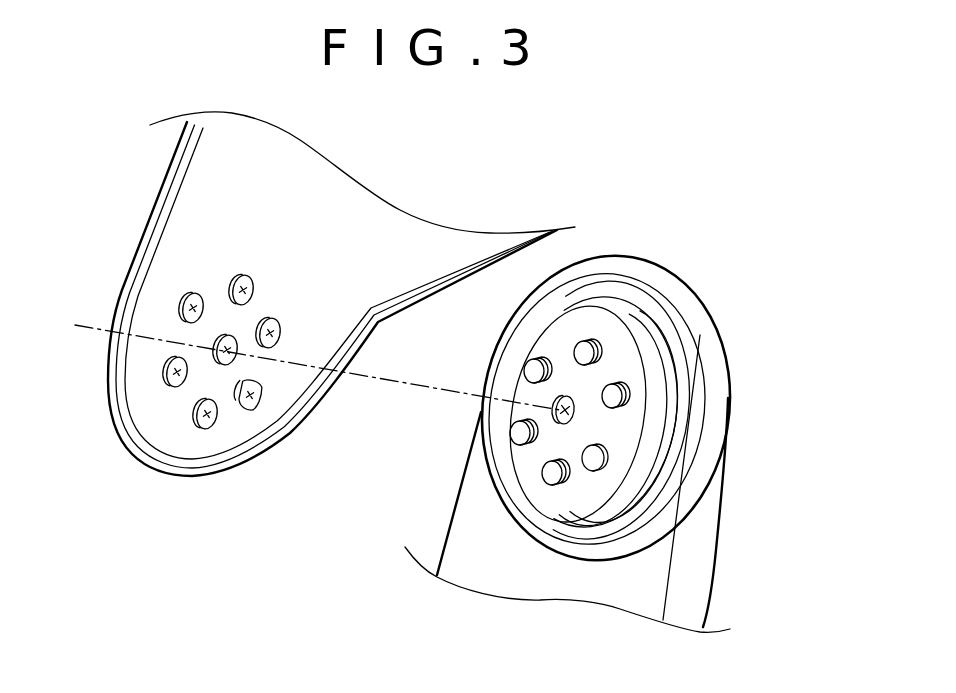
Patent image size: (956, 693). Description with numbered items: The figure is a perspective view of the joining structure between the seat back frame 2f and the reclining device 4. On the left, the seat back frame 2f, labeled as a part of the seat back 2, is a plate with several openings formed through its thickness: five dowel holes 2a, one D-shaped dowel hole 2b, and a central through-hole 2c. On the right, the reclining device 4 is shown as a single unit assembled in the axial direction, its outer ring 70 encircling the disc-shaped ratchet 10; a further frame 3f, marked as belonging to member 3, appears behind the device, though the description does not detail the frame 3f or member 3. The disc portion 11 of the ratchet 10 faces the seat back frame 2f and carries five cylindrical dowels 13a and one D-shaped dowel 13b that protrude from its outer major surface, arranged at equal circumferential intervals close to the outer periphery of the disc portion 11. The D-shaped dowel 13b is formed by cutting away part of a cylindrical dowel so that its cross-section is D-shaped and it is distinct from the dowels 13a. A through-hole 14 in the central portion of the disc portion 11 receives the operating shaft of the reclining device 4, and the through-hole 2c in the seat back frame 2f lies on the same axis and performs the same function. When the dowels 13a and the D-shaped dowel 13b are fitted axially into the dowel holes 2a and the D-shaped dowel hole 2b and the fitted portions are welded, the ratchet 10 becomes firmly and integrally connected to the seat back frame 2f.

The first member 2 is at (321, 294).
The seat back frame 2f is at (330, 200).
The dowel holes 2a is at (193, 300).
The D-shaped dowel hole 2b is at (266, 384).
The through-hole 2c is at (227, 336).
The second member 3 is at (607, 402).
The flange of second member 3f is at (663, 547).
The reclining device 4 is at (600, 273).
The outer ring 70 is at (644, 304).
The ratchet 10 is at (563, 318).
The disc portion 11 is at (617, 355).
The dowels 13a is at (576, 350).
The D-shaped dowel 13b is at (604, 459).
The through-hole 14 is at (554, 407).